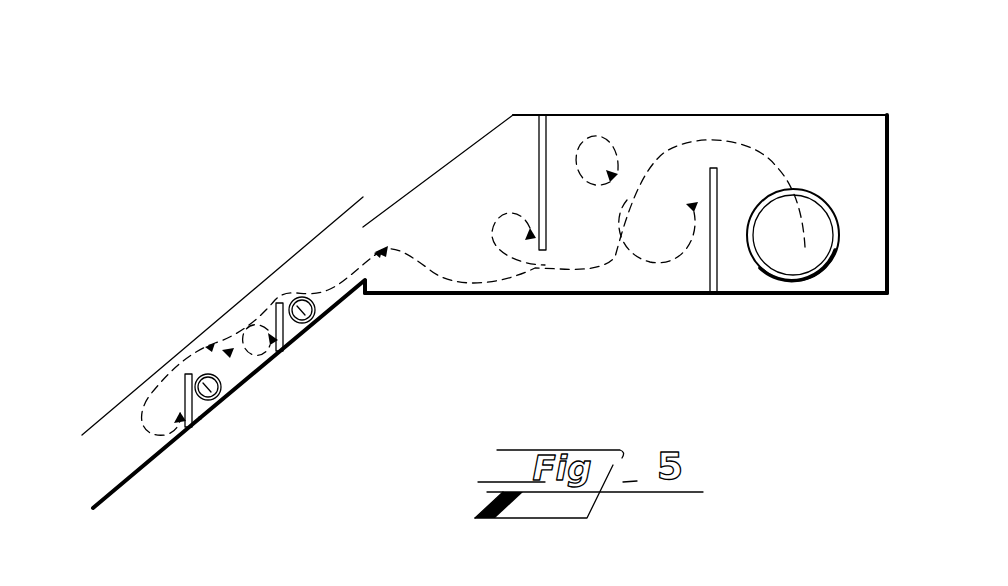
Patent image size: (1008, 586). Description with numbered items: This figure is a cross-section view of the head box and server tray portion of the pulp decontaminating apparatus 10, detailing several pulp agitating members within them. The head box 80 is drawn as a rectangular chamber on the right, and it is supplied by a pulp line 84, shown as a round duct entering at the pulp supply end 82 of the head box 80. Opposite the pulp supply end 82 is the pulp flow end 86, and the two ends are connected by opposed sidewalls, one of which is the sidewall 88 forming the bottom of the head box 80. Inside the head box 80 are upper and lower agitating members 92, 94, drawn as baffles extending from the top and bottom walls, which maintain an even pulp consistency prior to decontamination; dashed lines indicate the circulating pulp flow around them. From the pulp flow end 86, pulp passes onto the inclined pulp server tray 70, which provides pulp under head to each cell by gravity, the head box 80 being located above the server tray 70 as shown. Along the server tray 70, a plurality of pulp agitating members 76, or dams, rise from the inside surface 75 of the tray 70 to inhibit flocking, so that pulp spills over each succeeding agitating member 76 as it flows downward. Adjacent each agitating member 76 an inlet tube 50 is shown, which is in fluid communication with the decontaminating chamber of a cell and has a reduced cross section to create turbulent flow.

The apparatus 10 is at (375, 150).
The inlet tube 50 is at (205, 402).
The pulp server tray 70 is at (184, 443).
The inside surface 75 is at (148, 455).
The pulp agitating members 76 is at (186, 372).
The head box 80 is at (660, 114).
The pulp supply end 82 is at (887, 157).
The pulp line 84 is at (795, 293).
The pulp flow end 86 is at (356, 293).
The sidewall 88 is at (628, 295).
The upper agitating member 92 is at (539, 162).
The lower agitating member 94 is at (717, 180).